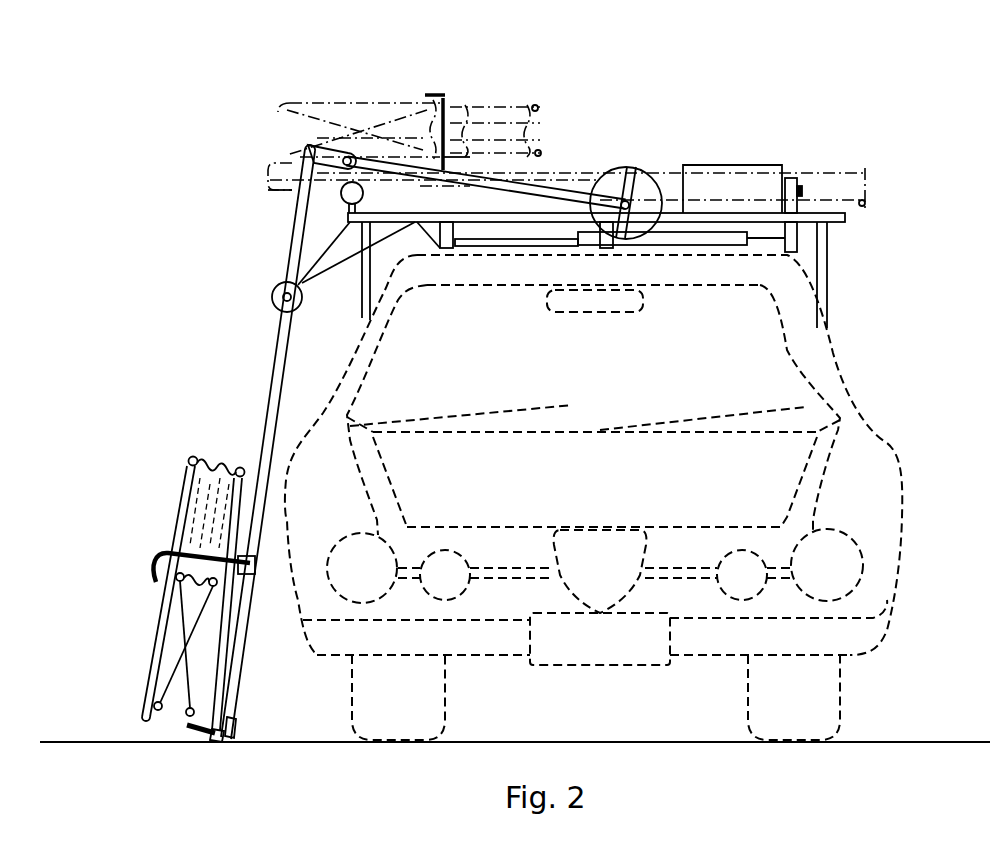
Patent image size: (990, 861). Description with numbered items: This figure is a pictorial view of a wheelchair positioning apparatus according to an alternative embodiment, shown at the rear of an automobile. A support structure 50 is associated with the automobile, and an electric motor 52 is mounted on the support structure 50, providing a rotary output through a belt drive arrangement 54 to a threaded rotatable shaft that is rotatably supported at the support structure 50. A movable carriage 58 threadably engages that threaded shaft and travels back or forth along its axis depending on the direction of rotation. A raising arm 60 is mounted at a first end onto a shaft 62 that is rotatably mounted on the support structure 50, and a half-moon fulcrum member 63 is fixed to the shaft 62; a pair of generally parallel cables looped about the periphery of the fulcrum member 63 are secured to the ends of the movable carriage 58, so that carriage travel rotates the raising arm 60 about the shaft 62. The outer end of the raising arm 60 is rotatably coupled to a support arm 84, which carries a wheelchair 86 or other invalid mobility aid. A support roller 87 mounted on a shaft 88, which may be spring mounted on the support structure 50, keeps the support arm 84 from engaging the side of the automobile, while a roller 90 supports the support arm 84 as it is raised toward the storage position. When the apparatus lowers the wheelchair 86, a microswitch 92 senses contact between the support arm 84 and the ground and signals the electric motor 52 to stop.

The support structure 50 is at (834, 236).
The electric motor 52 is at (725, 190).
The belt drive arrangement 54 is at (790, 180).
The movable carriage 58 is at (715, 238).
The raising arm 60 is at (547, 197).
The shaft 62 is at (625, 200).
The half-moon fulcrum member 63 is at (643, 188).
The support arm 84 is at (273, 395).
The wheelchair 86 is at (192, 497).
The support roller 87 is at (272, 296).
The shaft 88 is at (328, 248).
The roller 90 is at (363, 192).
The microswitch 92 is at (214, 740).